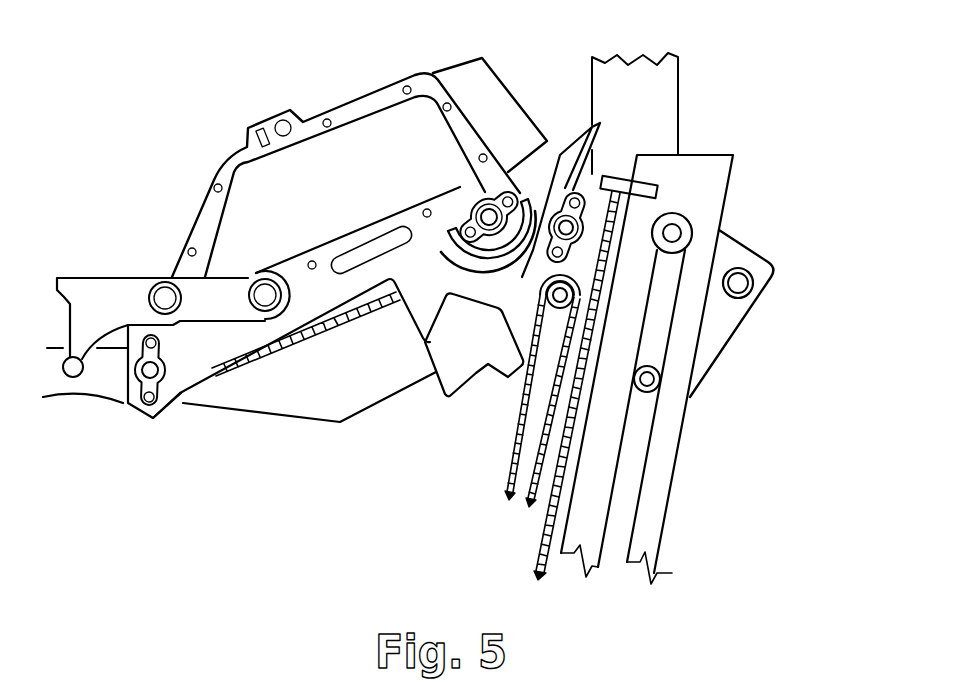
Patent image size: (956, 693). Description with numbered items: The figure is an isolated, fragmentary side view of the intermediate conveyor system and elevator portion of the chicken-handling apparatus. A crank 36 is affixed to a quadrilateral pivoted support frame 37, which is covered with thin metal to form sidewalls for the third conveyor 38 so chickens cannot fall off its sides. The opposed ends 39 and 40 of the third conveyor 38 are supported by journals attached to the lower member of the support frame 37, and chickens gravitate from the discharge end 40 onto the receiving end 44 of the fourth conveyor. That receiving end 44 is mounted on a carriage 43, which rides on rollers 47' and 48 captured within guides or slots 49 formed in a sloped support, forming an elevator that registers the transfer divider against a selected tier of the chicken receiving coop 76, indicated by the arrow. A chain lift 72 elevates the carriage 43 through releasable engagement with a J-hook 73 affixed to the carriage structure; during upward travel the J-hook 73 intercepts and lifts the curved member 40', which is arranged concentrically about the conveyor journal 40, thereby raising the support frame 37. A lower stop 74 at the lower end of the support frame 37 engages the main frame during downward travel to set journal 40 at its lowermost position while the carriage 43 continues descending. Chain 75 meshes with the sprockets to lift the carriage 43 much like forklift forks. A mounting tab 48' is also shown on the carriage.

The support frame 37 is at (197, 137).
The crank 36 is at (227, 257).
The third conveyor 38 is at (302, 343).
The end of third conveyor 39 is at (157, 375).
The discharge end of third conveyor 40 is at (470, 203).
The curved member 40' is at (451, 218).
The J-hook 73 is at (461, 268).
The receiving end of fourth conveyor 44 is at (551, 251).
The chain lift 72 is at (552, 308).
The lower stop 74 is at (486, 372).
The chain 75 is at (540, 532).
The carriage 43 is at (740, 223).
The roller 47' is at (686, 209).
The roller 48 is at (683, 407).
The mounting tab 48' is at (752, 307).
The guides or slots 49 is at (658, 466).
The chicken receiving coop 76 is at (880, 302).